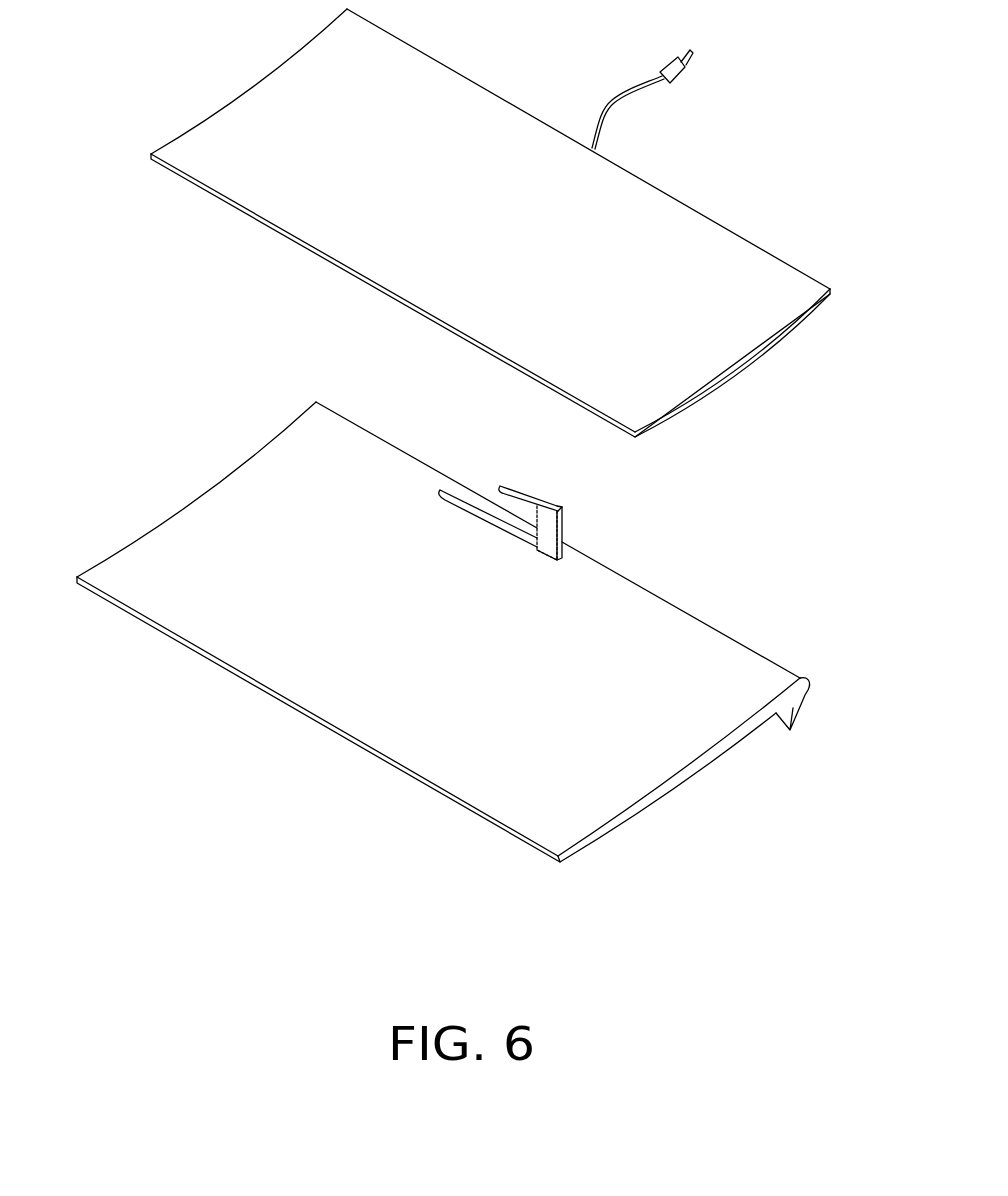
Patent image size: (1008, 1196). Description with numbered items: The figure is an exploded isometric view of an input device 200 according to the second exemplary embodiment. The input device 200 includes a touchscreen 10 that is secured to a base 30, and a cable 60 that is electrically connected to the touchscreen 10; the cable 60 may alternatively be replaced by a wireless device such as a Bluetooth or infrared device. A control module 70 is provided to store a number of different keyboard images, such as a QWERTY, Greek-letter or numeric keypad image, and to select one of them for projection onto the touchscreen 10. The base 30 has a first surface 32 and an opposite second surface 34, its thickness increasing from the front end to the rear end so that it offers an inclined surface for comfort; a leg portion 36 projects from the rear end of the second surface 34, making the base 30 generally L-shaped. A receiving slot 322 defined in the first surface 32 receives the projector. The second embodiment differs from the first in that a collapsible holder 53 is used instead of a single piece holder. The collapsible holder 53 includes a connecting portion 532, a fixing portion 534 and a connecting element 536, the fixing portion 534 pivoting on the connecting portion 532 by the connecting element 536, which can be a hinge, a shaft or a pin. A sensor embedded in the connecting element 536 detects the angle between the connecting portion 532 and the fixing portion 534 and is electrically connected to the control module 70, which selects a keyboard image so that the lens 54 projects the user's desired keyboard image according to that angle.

The input device 200 is at (176, 67).
The touchscreen 10 is at (230, 200).
The base 30 is at (303, 428).
The first surface 32 is at (712, 667).
The second surface 34 is at (722, 760).
The leg portion 36 is at (792, 708).
The receiving slot 322 is at (453, 498).
The collapsible holder 53 is at (660, 462).
The connecting portion 532 is at (563, 537).
The fixing portion 534 is at (533, 492).
The connecting element 536 is at (560, 508).
The lens 54 is at (516, 497).
The cable 60 is at (612, 107).
The control module 70 is at (668, 68).